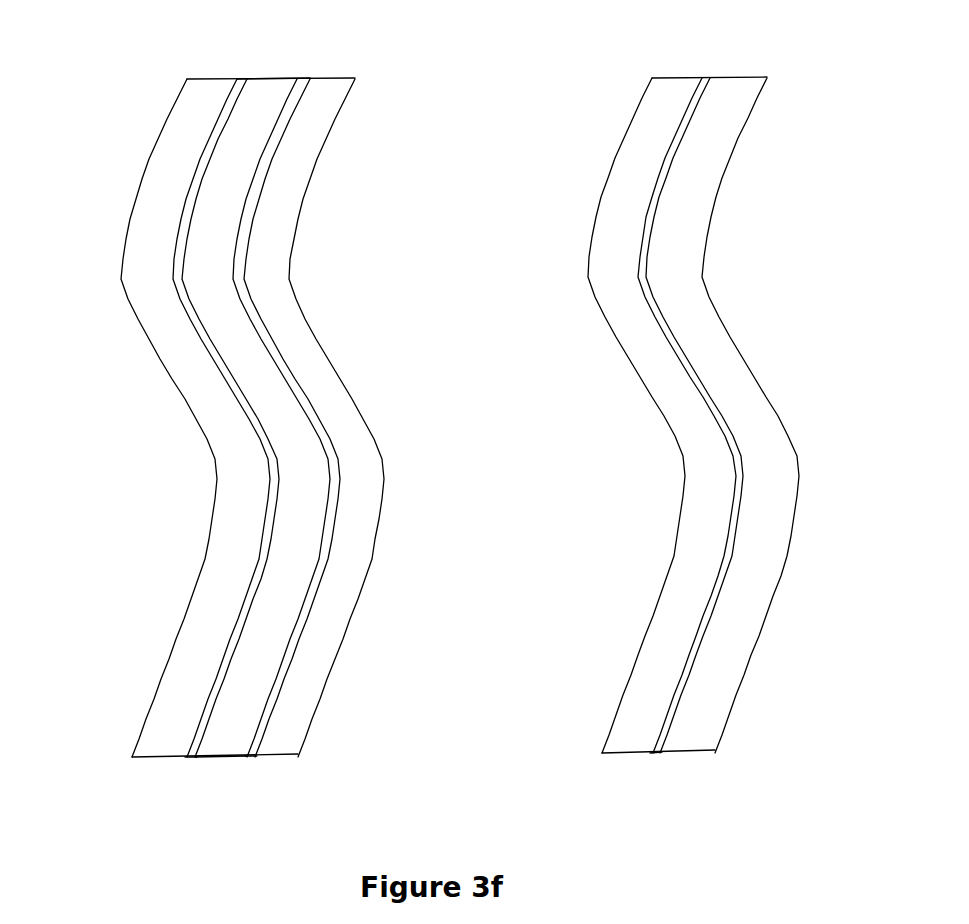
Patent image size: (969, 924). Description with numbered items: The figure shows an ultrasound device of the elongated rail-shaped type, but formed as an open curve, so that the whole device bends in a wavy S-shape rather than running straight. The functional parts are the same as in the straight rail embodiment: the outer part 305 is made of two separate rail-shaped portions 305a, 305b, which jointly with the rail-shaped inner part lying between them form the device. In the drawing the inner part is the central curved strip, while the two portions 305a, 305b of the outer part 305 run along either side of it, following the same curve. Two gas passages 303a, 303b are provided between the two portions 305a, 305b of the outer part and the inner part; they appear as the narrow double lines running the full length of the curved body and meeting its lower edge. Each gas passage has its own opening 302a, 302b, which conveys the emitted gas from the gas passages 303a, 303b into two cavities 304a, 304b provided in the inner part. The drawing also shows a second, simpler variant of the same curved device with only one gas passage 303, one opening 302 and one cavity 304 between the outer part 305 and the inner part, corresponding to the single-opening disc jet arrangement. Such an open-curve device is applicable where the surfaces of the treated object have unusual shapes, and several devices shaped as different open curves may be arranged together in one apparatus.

The opening 302 is at (706, 616).
The opening 302a is at (237, 621).
The opening 302b is at (302, 613).
The gas passage 303 is at (657, 753).
The gas passage 303a is at (190, 758).
The gas passage 303b is at (250, 757).
The cavity 304 is at (678, 703).
The cavity 304a is at (210, 703).
The cavity 304b is at (277, 703).
The outer part 305 is at (670, 90).
The rail-shaped portion of the outer part 305a is at (207, 95).
The rail-shaped portion of the outer part 305b is at (322, 100).